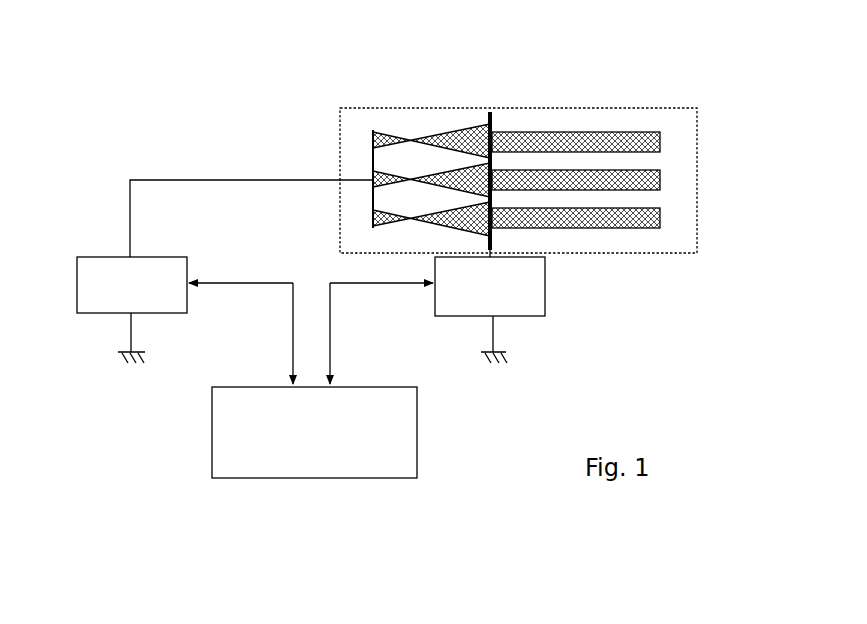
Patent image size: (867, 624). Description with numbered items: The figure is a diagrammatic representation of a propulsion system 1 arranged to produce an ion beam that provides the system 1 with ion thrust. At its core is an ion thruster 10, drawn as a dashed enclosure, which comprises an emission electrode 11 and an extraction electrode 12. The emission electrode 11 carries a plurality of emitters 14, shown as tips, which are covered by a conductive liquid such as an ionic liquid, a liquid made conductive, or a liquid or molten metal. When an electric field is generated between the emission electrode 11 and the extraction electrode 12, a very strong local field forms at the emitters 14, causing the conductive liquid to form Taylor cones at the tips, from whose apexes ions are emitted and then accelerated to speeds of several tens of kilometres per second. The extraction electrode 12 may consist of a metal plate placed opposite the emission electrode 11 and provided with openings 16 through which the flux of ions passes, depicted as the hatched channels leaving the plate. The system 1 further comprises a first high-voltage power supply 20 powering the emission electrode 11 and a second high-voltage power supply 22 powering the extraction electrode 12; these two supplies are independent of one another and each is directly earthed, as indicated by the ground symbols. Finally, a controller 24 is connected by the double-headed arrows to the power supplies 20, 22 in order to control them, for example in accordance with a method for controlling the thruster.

The system 1 is at (184, 116).
The ion thruster 10 is at (697, 172).
The emission electrode 11 is at (372, 138).
The extraction electrode 12 is at (493, 118).
The emitters 14 is at (380, 137).
The openings 16 is at (498, 127).
The first high-voltage power supply 20 is at (97, 285).
The second high-voltage power supply 22 is at (530, 295).
The controller 24 is at (305, 470).